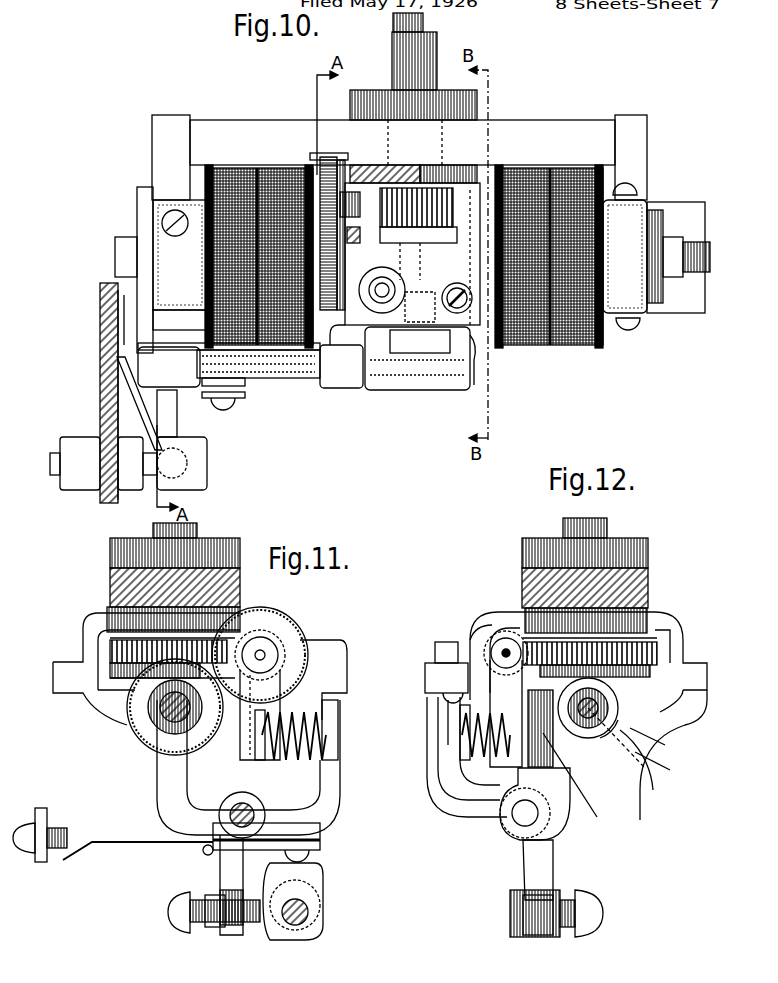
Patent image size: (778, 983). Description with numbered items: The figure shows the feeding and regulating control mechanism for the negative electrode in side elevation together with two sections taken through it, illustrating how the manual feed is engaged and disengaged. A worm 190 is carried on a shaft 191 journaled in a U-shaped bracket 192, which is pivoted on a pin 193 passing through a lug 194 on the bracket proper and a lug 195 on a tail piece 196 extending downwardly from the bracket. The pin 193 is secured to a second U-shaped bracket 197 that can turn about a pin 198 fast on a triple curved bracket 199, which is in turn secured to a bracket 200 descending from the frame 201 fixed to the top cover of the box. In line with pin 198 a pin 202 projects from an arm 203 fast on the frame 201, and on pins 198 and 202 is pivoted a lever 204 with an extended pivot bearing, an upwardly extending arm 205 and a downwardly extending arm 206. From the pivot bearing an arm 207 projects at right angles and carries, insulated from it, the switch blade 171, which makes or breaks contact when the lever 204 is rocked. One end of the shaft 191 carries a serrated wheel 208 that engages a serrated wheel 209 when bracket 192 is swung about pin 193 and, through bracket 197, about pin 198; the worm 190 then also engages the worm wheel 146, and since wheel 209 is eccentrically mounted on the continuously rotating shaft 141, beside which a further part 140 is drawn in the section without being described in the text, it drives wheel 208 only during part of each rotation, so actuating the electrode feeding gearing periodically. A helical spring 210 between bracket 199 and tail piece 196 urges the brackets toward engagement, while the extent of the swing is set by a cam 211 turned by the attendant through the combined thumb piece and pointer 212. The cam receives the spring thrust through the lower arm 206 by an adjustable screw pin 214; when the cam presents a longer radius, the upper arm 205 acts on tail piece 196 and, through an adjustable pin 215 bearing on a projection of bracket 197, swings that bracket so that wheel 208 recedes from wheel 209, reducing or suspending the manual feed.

In FIG. 12, the lever 140 is at (605, 742).
In FIG. 11, the shaft 141 is at (160, 712).
In FIG. 12, the shaft 141 is at (588, 708).
In FIG. 11, the worm wheel 146 is at (115, 680).
In FIG. 12, the worm wheel 146 is at (690, 680).
In FIG. 11, the switch blade 171 is at (138, 839).
In FIG. 10, the worm 190 is at (455, 200).
In FIG. 11, the worm 190 is at (266, 650).
In FIG. 12, the worm 190 is at (492, 640).
In FIG. 12, the shaft 191 is at (505, 650).
In FIG. 10, the U-shaped bracket 192 is at (412, 254).
In FIG. 11, the U-shaped bracket 192 is at (300, 703).
In FIG. 12, the U-shaped bracket 192 is at (506, 713).
In FIG. 10, the pin 193 is at (392, 290).
In FIG. 12, the pin 193 is at (540, 762).
In FIG. 10, the lug 194 is at (418, 219).
In FIG. 12, the lug 194 is at (470, 728).
In FIG. 10, the lug 195 is at (445, 310).
In FIG. 12, the lug 195 is at (572, 792).
In FIG. 10, the tail piece 196 is at (430, 308).
In FIG. 11, the tail piece 196 is at (268, 758).
In FIG. 12, the tail piece 196 is at (490, 752).
In FIG. 10, the second U-shaped bracket 197 is at (380, 372).
In FIG. 12, the second U-shaped bracket 197 is at (552, 798).
In FIG. 10, the pin 198 is at (474, 380).
In FIG. 12, the pin 198 is at (523, 820).
In FIG. 10, the triple curved bracket 199 is at (410, 372).
In FIG. 12, the triple curved bracket 199 is at (668, 700).
In FIG. 10, the bracket 200 is at (455, 165).
In FIG. 11, the bracket 200 is at (315, 655).
In FIG. 12, the bracket 200 is at (470, 645).
In FIG. 10, the frame 201 is at (242, 136).
In FIG. 10, the pin 202 is at (160, 362).
In FIG. 10, the arm 203 is at (143, 228).
In FIG. 10, the lever 204 is at (290, 379).
In FIG. 10, the upwardly extending arm 205 is at (338, 332).
In FIG. 11, the upwardly extending arm 205 is at (228, 780).
In FIG. 10, the downwardly extending arm 206 is at (174, 408).
In FIG. 11, the downwardly extending arm 206 is at (222, 862).
In FIG. 10, the arm 207 is at (243, 382).
In FIG. 11, the arm 207 is at (298, 830).
In FIG. 10, the serrated wheel 208 is at (331, 157).
In FIG. 11, the serrated wheel 208 is at (270, 626).
In FIG. 11, the serrated wheel 209 is at (162, 752).
In FIG. 12, the serrated wheel 209 is at (640, 725).
In FIG. 11, the helical spring 210 is at (330, 720).
In FIG. 10, the cam 211 is at (195, 475).
In FIG. 11, the cam 211 is at (318, 882).
In FIG. 10, the combined thumb piece and pointer 212 is at (67, 413).
In FIG. 11, the adjustable screw pin 214 is at (197, 922).
In FIG. 12, the adjustable pin 215 is at (450, 778).